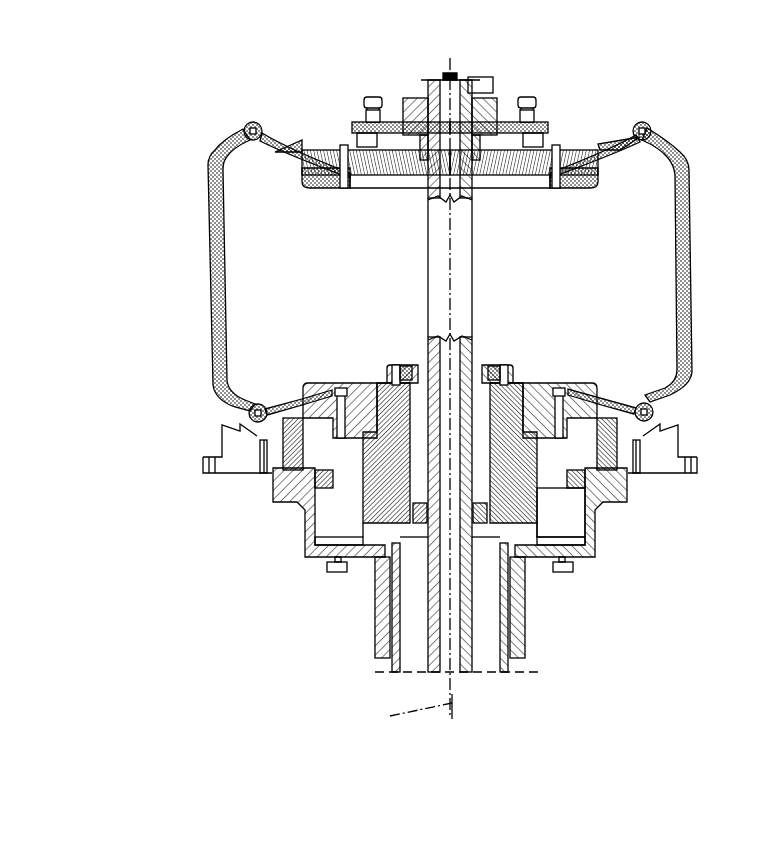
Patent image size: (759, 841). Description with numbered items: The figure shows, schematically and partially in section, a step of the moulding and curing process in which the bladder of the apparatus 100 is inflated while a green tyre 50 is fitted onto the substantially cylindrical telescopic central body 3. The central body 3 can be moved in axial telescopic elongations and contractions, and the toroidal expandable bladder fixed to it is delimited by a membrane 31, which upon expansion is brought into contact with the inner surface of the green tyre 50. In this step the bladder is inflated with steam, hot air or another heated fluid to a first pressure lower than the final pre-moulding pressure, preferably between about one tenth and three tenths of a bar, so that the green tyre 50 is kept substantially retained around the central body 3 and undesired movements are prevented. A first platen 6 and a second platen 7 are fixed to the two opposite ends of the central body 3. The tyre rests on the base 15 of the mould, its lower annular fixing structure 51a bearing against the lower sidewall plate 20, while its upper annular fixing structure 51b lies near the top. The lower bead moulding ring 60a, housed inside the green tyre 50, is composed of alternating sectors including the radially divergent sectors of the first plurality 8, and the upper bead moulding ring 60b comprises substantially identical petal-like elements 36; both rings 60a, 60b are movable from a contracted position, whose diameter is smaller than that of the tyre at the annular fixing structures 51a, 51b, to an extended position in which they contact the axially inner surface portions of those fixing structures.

The apparatus 100 is at (310, 88).
The telescopic central body 3 is at (428, 258).
The green tyre 50 is at (695, 283).
The membrane 31 is at (677, 262).
The second annular fixing structure 51b is at (244, 130).
The first annular fixing structure 51a is at (250, 408).
The petal-like elements 36 is at (628, 140).
The upper bead moulding ring 60b is at (586, 136).
The second platen 7 is at (542, 188).
The lower bead moulding ring 60a is at (276, 490).
The first platen 6 is at (550, 383).
The base 15 is at (578, 525).
The lower sidewall plate 20 is at (258, 428).
The sectors of the first plurality 8 is at (660, 436).